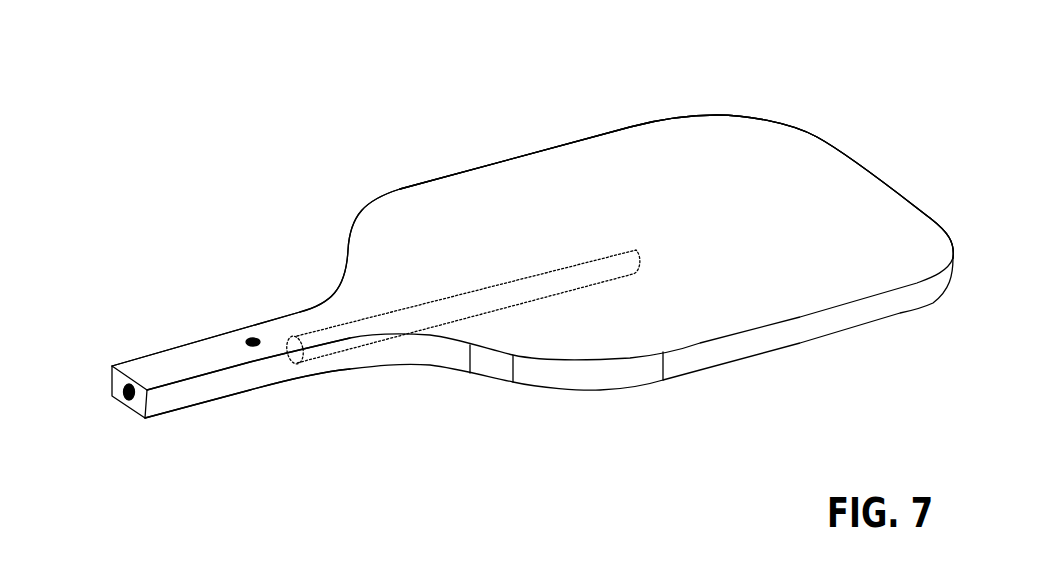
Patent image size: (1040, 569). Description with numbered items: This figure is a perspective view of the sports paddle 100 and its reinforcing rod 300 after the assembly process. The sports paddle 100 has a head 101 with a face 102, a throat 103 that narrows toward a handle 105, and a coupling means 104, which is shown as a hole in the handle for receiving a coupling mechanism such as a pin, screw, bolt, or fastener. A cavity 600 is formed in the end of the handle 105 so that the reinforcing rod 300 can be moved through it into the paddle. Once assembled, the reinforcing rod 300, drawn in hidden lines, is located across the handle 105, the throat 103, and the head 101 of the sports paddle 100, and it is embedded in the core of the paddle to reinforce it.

The sports paddle 100 is at (650, 98).
The head 101 is at (603, 137).
The face 102 is at (538, 177).
The throat 103 is at (330, 298).
The coupling means 104 is at (250, 338).
The handle 105 is at (163, 350).
The reinforcing rod 300 is at (467, 292).
The cavity 600 is at (120, 383).